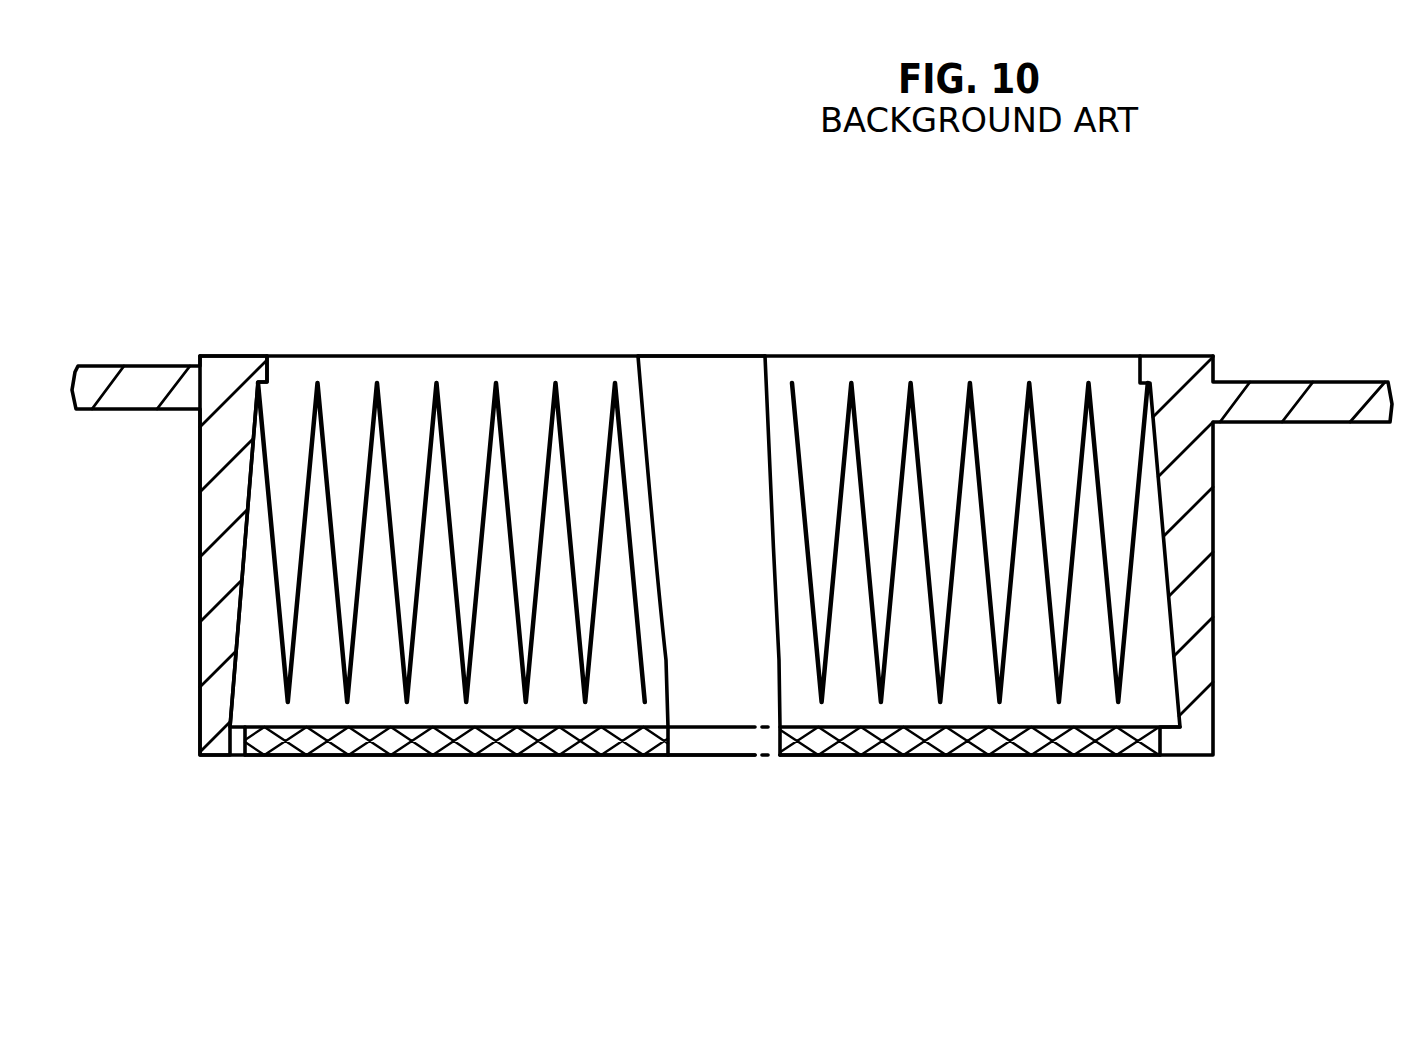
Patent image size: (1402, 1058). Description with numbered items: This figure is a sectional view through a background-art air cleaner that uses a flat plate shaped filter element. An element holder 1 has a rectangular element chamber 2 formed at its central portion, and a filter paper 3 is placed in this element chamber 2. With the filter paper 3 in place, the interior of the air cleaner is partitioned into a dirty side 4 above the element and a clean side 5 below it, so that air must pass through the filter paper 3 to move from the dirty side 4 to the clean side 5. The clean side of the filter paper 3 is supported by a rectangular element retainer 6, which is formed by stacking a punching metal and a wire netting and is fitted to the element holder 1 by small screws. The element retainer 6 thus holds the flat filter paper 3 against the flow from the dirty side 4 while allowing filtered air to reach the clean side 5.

The element holder 1 is at (1023, 337).
The element chamber 2 is at (253, 665).
The filter paper 3 is at (495, 420).
The dirty side 4 is at (783, 223).
The clean side 5 is at (748, 915).
The element retainer 6 is at (560, 737).